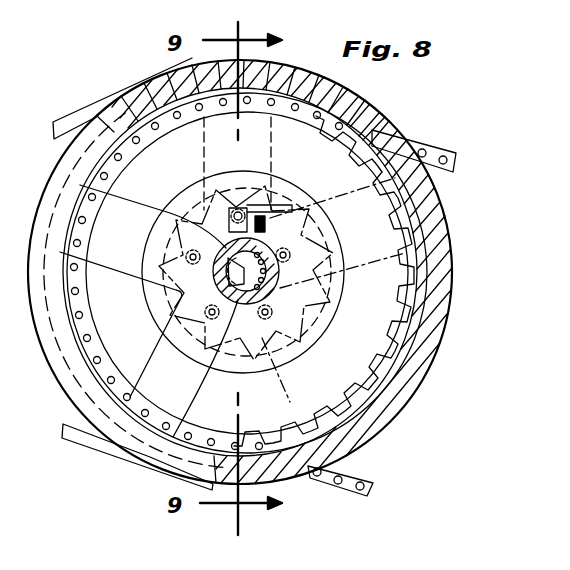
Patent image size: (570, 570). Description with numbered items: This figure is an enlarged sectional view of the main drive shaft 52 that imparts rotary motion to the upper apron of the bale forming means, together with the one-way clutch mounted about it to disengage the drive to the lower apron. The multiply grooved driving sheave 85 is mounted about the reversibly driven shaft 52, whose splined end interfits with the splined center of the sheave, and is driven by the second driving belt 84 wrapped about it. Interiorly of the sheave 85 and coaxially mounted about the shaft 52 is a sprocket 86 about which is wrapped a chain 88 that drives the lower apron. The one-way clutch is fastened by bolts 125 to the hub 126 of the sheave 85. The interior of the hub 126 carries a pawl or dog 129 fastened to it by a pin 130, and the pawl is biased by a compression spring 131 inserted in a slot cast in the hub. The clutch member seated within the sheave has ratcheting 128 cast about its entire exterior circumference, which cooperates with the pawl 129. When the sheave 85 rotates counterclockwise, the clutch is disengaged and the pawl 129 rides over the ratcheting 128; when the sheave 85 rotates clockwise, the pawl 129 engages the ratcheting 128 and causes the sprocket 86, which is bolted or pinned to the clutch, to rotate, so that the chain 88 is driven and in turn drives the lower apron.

The reversibly driven shaft 52 is at (278, 283).
The second driving belt 84 is at (80, 110).
The multiply grooved driving sheave 85 is at (48, 361).
The sprocket 86 is at (440, 340).
The chain 88 is at (425, 148).
The bolts 125 is at (186, 320).
The hub 126 is at (318, 318).
The ratcheting 128 is at (188, 205).
The pawl 129 is at (285, 188).
The pin 130 is at (245, 205).
The compression spring 131 is at (280, 227).